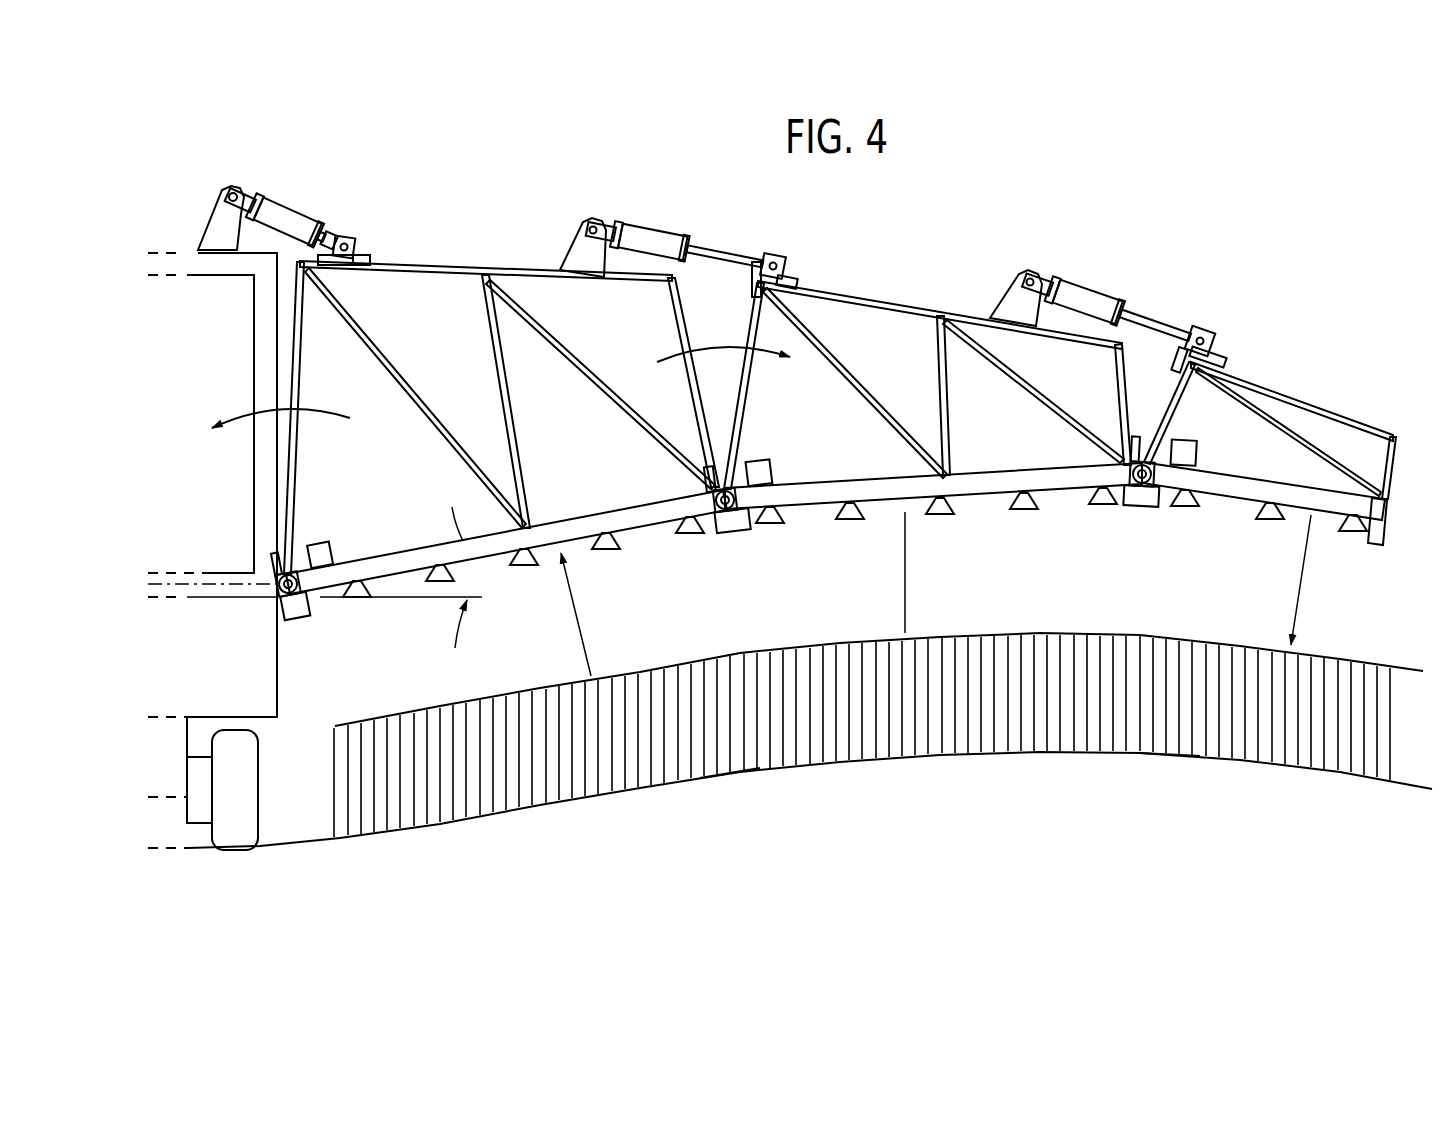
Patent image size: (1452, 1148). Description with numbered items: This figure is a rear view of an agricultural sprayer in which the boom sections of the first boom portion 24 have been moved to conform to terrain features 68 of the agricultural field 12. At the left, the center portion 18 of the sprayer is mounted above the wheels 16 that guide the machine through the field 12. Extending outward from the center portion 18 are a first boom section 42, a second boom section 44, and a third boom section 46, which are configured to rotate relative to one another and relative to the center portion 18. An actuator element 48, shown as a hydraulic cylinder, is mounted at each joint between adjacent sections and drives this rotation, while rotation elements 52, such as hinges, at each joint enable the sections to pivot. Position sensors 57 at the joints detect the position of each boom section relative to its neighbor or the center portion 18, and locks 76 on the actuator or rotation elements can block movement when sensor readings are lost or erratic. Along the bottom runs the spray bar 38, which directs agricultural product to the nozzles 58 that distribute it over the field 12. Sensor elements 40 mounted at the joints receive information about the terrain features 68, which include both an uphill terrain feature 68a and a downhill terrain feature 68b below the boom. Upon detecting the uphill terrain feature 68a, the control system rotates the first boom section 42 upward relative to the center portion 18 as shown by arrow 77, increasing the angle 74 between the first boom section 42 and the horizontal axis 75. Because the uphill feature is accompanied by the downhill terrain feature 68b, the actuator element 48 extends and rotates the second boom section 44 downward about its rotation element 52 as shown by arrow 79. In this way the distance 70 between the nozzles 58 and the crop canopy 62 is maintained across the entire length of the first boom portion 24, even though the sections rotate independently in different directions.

The agricultural field 12 is at (277, 850).
The wheels 16 is at (258, 790).
The center portion 18 is at (192, 250).
The first boom portion 24 is at (1207, 195).
The spray bar 38 is at (587, 523).
The sensor elements 40 is at (293, 617).
The first boom section 42 is at (470, 266).
The second boom section 44 is at (928, 300).
The third boom section 46 is at (1318, 405).
The actuator element 48 is at (287, 202).
The rotation elements 52 is at (353, 243).
The position sensors 57 is at (357, 265).
The nozzles 58 is at (690, 535).
The crop canopy 62 is at (1337, 657).
The terrain features 68 is at (958, 817).
The uphill terrain feature 68a is at (758, 777).
The downhill terrain feature 68b is at (1162, 760).
The distance 70 is at (580, 613).
The angle 74 is at (473, 577).
The horizontal axis 75 is at (203, 582).
The locks 76 is at (328, 225).
The arrow 77 is at (272, 402).
The arrow 79 is at (733, 343).